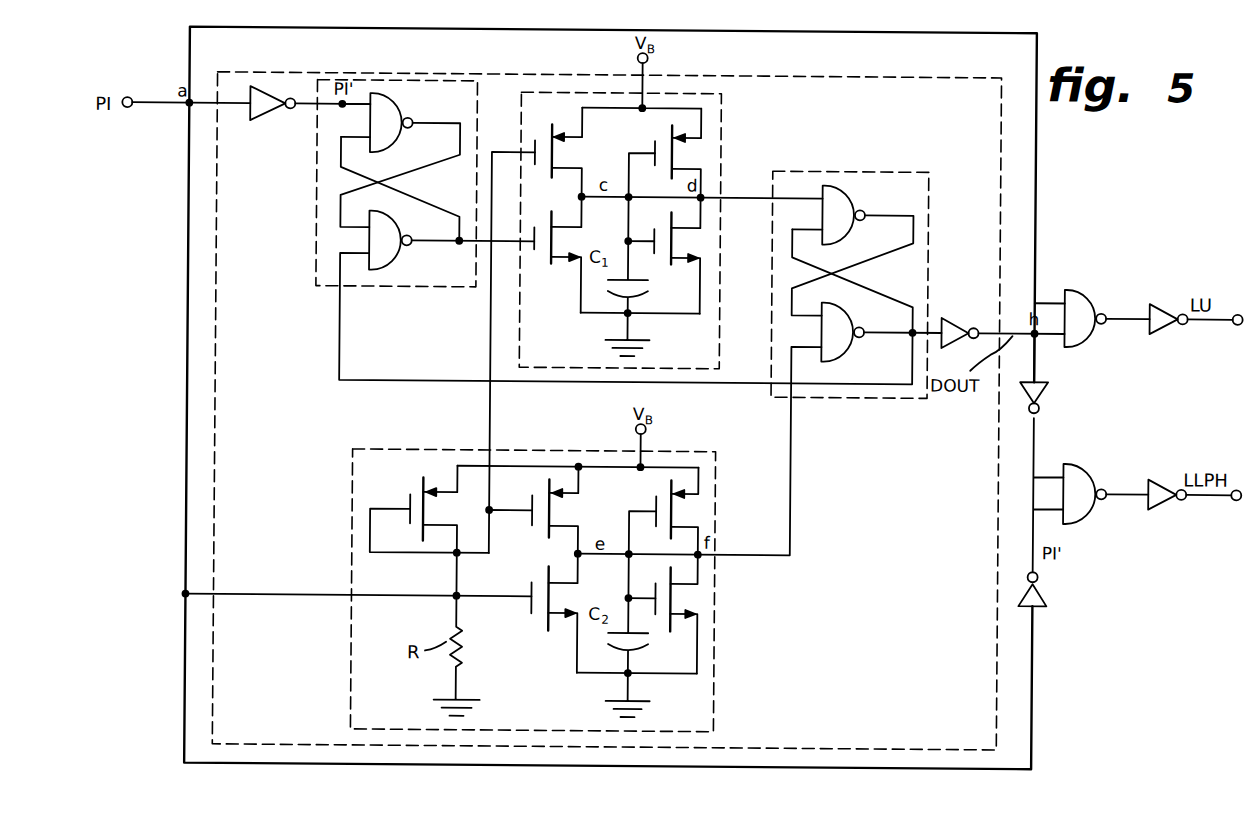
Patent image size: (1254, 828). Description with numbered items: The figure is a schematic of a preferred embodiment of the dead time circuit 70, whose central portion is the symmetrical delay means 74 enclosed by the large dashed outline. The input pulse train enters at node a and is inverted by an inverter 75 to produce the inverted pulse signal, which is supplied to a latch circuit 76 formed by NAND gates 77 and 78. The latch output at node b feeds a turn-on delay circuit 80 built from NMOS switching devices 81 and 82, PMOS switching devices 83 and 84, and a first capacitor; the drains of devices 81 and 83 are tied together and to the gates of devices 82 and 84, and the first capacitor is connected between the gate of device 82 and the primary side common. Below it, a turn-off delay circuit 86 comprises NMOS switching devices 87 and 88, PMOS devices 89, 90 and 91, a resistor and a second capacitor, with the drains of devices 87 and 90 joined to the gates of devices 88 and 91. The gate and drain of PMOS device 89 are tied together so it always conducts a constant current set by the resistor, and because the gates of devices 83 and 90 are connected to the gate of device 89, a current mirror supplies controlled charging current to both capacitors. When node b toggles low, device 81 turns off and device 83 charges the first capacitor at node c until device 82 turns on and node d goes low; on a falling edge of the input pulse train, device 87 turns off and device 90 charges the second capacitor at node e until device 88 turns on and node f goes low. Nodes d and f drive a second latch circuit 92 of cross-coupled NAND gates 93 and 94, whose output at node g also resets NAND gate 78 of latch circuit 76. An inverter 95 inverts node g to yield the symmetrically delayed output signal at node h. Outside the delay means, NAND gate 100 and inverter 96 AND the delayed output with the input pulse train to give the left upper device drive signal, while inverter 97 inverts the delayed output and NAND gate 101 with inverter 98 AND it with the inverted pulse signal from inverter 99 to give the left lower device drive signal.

The dead time circuit 70 is at (1120, 711).
The symmetrical delay means 74 is at (398, 75).
The inverter 75 is at (256, 123).
The latch circuit 76 is at (478, 102).
The NAND gate 77 is at (404, 102).
The NAND gate 78 is at (396, 273).
The turn-on delay circuit 80 is at (723, 149).
The NMOS switching device 81 is at (550, 265).
The NMOS switching device 82 is at (671, 265).
The PMOS switching device 83 is at (550, 127).
The PMOS switching device 84 is at (653, 148).
The turn-off delay circuit 86 is at (353, 451).
The NMOS switching device 87 is at (550, 631).
The NMOS switching device 88 is at (671, 632).
The PMOS device 89 is at (422, 488).
The PMOS switching device 90 is at (549, 536).
The PMOS device 91 is at (657, 504).
The latch circuit 92 is at (876, 168).
The NAND gate 93 is at (841, 184).
The NAND gate 94 is at (843, 360).
The inverter 95 is at (946, 318).
The inverter 96 is at (1159, 301).
The inverter 97 is at (1051, 383).
The inverter 98 is at (1162, 476).
The inverter 99 is at (1052, 587).
The NAND gate 100 is at (1076, 287).
The NAND gate 101 is at (1078, 461).